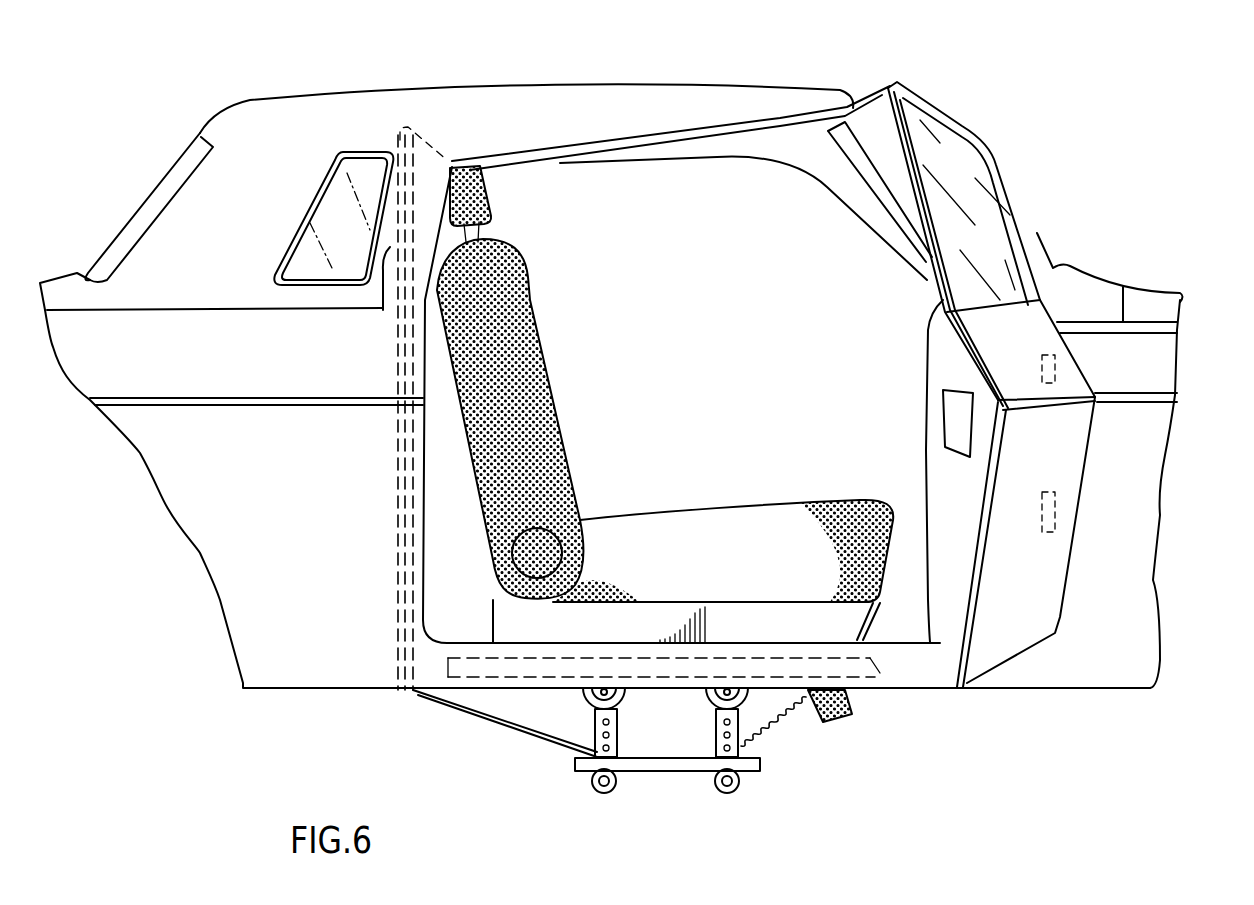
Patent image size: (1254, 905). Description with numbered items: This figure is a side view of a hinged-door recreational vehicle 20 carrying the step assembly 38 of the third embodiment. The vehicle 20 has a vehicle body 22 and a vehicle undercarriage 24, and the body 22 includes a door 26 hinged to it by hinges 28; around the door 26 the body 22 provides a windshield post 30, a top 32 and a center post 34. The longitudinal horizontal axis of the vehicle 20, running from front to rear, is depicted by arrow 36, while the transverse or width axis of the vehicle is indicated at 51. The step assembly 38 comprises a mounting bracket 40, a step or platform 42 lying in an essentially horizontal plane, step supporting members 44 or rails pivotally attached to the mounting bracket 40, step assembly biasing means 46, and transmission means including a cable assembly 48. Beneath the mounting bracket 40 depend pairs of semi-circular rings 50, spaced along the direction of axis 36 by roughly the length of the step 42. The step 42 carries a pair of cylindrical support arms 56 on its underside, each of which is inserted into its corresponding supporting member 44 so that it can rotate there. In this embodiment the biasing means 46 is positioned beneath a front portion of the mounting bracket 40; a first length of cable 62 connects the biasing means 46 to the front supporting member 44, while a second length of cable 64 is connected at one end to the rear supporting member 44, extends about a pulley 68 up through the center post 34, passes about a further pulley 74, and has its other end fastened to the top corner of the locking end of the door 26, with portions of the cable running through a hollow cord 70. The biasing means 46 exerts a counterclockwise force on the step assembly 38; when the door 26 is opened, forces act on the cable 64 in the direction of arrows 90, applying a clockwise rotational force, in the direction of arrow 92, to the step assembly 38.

The recreational vehicle 20 is at (1148, 228).
The vehicle body 22 is at (1143, 473).
The vehicle undercarriage 24 is at (463, 680).
The door 26 is at (930, 340).
The hinges 28 is at (1063, 368).
The windshield post 30 is at (957, 268).
The top 32 is at (804, 56).
The center post 34 is at (380, 312).
The longitudinal horizontal axis 36 is at (425, 40).
The step assembly 38 is at (823, 740).
The mounting bracket 40 is at (617, 680).
The step 42 is at (643, 772).
The step supporting members 44 is at (713, 740).
The step assembly biasing means 46 is at (847, 713).
The cable assembly 48 is at (700, 166).
The semi-circular rings 50 is at (625, 697).
The transverse axis 51 is at (600, 690).
The cylindrical support arms 56 is at (593, 783).
The first length of cable 62 is at (803, 777).
The second length of cable 64 is at (493, 722).
The pulley 68 is at (427, 362).
The hollow cord 70 is at (478, 603).
The pulley 74 is at (481, 107).
The arrows 90 is at (720, 147).
The arrow 92 is at (613, 835).